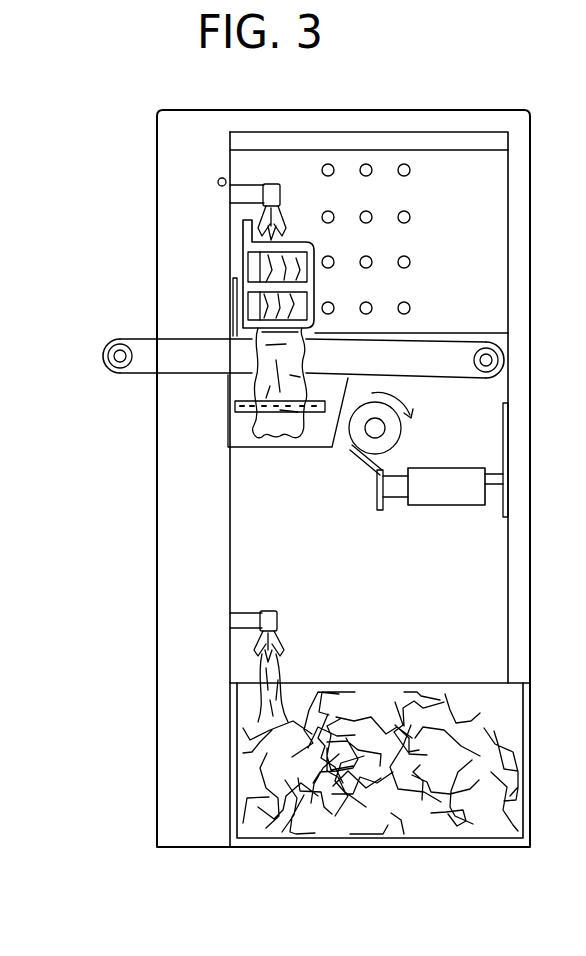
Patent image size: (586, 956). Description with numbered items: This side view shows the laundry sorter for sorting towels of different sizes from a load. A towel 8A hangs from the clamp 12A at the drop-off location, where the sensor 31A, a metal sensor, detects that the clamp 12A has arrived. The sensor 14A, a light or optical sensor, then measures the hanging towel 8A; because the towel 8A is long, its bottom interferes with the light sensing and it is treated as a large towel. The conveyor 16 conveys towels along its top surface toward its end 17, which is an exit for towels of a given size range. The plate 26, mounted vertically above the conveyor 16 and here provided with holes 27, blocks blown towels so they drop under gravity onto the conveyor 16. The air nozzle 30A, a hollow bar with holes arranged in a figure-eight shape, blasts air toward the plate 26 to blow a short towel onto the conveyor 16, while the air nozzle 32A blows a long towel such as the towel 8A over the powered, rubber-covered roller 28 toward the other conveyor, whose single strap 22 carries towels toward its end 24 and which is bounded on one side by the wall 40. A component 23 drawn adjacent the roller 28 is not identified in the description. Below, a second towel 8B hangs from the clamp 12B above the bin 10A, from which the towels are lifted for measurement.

The towel 8A is at (268, 265).
The towel 8B is at (278, 676).
The bin 10A is at (372, 692).
The clamp 12A is at (250, 186).
The clamp 12B is at (248, 612).
The sensor 14A is at (232, 388).
The conveyor 16 is at (432, 340).
The end 17 is at (118, 338).
The strap 22 is at (435, 510).
The drive arm 23 is at (402, 468).
The end 24 is at (500, 478).
The plate 26 is at (303, 160).
The holes 27 is at (410, 171).
The roller 28 is at (402, 432).
The air nozzle 30A is at (303, 243).
The sensor 31A is at (217, 181).
The air nozzle 32A is at (232, 312).
The wall 40 is at (510, 428).